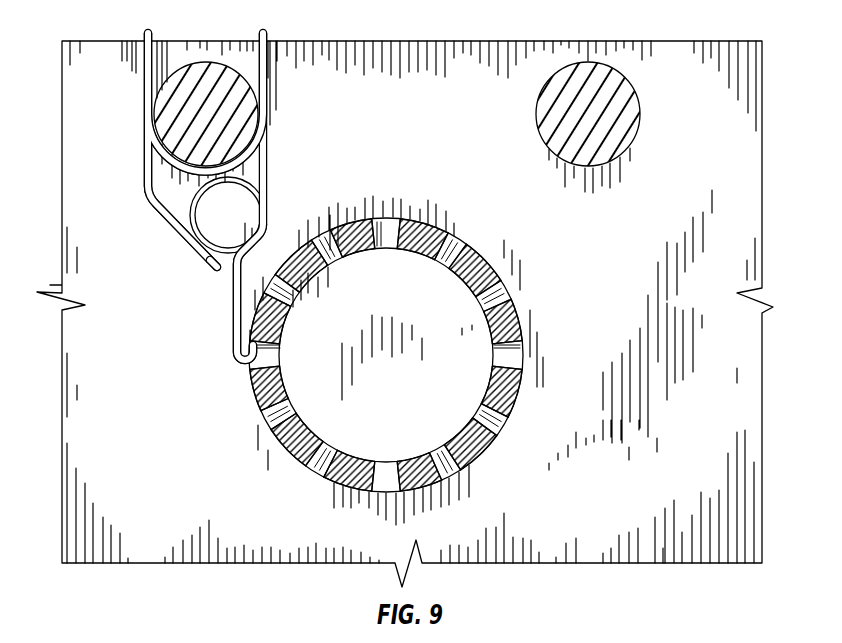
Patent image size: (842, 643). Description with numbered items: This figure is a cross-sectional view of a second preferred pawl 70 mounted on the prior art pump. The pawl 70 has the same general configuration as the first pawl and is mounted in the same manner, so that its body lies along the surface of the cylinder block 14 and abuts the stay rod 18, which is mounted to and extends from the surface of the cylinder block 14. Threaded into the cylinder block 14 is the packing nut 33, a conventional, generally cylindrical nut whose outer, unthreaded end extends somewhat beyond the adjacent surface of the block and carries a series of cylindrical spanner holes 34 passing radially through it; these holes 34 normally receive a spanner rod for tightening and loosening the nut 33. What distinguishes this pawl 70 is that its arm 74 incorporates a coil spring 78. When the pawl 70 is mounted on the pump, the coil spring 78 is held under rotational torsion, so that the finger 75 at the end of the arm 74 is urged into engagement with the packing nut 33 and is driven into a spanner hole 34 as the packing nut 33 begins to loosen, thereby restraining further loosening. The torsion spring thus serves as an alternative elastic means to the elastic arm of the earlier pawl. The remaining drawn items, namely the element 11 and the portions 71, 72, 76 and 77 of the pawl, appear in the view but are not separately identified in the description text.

The panel 11 is at (516, 42).
The cylinder block 14 is at (711, 152).
The stay rod 18 is at (166, 112).
The packing nut 33 is at (510, 322).
The spanner holes 34 is at (266, 350).
The pawl 70 is at (268, 176).
The clip loop portion 71 is at (141, 136).
The clip end 72 is at (148, 30).
The arm 74 is at (232, 300).
The finger 75 is at (262, 357).
The clip arm 76 is at (158, 212).
The clip arm tip 77 is at (213, 271).
The coil spring 78 is at (247, 194).